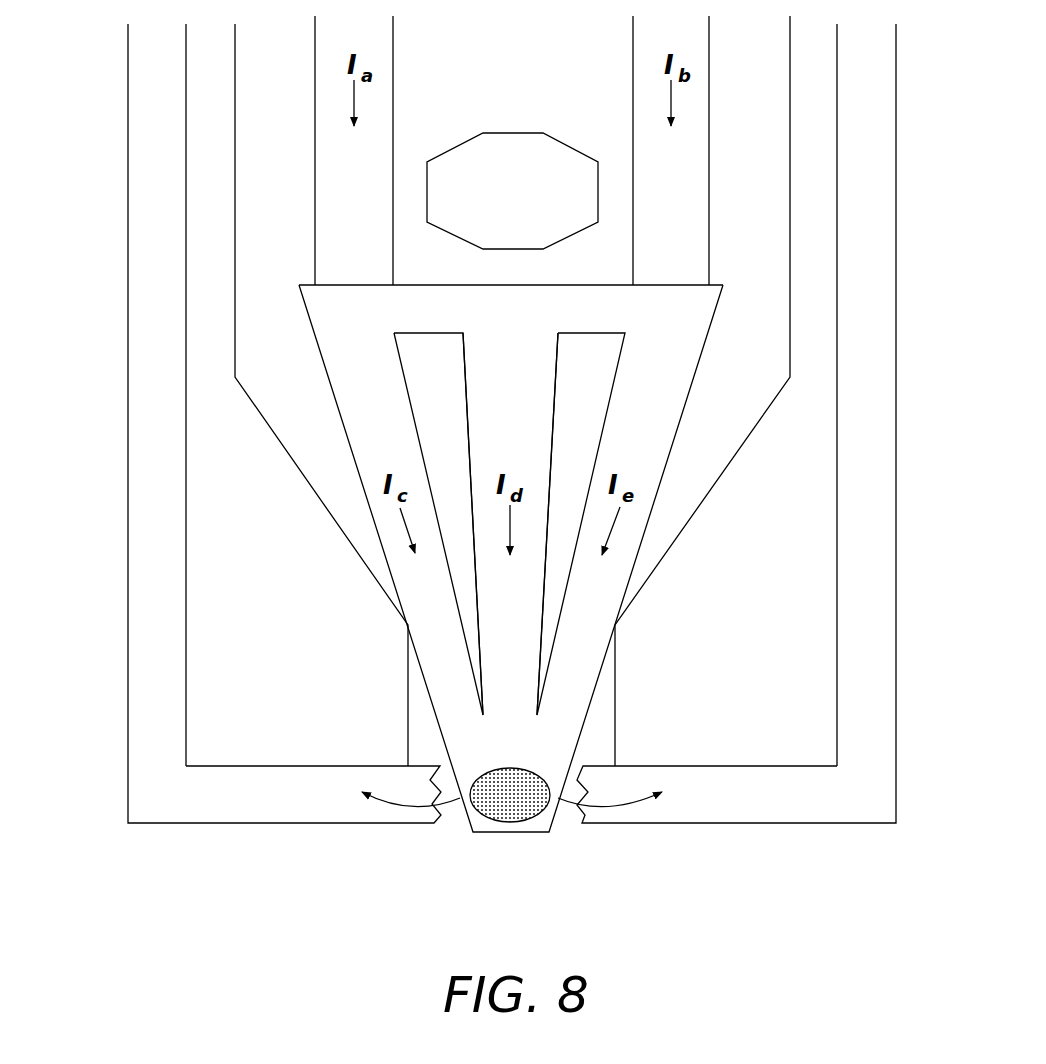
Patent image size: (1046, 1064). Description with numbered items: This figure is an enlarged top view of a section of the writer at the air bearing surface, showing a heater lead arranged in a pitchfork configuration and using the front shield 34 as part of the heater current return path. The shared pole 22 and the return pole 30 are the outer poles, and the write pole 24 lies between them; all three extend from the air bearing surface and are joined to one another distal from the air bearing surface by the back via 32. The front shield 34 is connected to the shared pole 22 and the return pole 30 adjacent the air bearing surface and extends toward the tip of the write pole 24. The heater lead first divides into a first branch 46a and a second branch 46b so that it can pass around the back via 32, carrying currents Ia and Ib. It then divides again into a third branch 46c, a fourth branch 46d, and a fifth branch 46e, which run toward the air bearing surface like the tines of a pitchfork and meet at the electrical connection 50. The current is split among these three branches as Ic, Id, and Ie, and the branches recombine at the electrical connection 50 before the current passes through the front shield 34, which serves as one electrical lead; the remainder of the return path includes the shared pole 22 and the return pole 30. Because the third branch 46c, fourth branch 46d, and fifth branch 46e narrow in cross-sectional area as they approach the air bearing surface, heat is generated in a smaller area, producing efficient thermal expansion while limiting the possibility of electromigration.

The shared pole 22 is at (128, 500).
The return pole 30 is at (896, 510).
The write pole 24 is at (318, 498).
The back via 32 is at (508, 150).
The front shield 34 is at (245, 808).
The first branch 46a is at (335, 180).
The second branch 46b is at (684, 187).
The third branch 46c is at (425, 625).
The fourth branch 46d is at (528, 410).
The fifth branch 46e is at (593, 649).
The electrical connection 50 is at (509, 805).